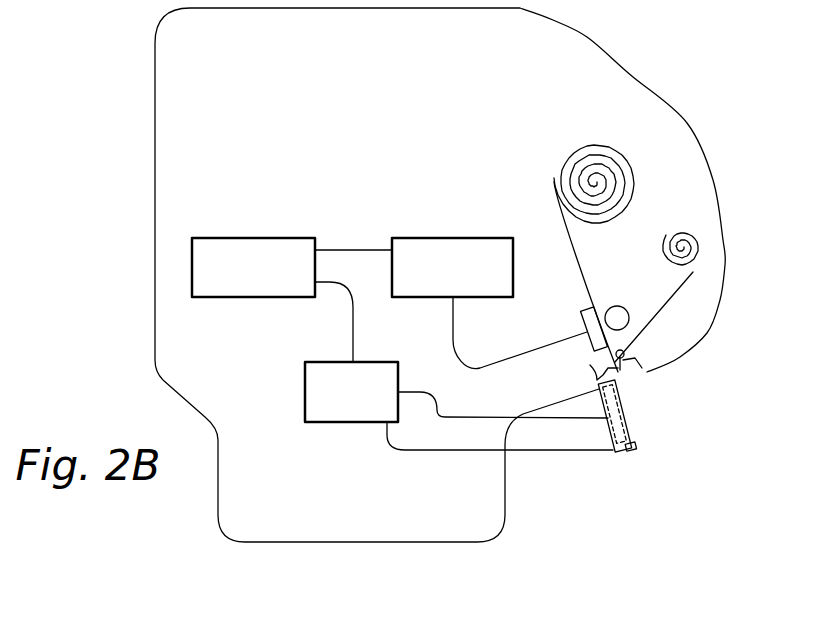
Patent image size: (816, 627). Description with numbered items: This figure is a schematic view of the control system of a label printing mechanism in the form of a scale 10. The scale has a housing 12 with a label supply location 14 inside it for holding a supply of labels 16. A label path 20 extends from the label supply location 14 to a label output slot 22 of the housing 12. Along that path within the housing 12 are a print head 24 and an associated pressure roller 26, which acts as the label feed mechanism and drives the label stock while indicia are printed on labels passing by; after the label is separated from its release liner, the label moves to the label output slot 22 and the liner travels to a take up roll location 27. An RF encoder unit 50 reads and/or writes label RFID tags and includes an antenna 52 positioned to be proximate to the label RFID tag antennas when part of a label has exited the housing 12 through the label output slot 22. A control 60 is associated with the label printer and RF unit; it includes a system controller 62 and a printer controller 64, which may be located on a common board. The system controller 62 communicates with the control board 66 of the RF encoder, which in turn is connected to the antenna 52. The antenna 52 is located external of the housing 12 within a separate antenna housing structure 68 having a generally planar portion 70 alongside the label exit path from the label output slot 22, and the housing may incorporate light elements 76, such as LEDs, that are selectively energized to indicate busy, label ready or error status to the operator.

The scale 10 is at (135, 102).
The housing 12 is at (152, 228).
The label supply location 14 is at (630, 130).
The labels 16 is at (637, 175).
The label path 20 is at (577, 250).
The label output slot 22 is at (642, 368).
The print head 24 is at (583, 312).
The pressure roller 26 is at (617, 306).
The take up roll location 27 is at (695, 239).
The RF encoder unit 50 is at (372, 442).
The antenna 52 is at (620, 398).
The control 60 is at (257, 200).
The system controller 62 is at (253, 297).
The printer controller 64 is at (463, 238).
The control board 66 is at (305, 390).
The antenna housing structure 68 is at (603, 427).
The generally planar portion 70 is at (627, 423).
The light elements 76 is at (627, 453).